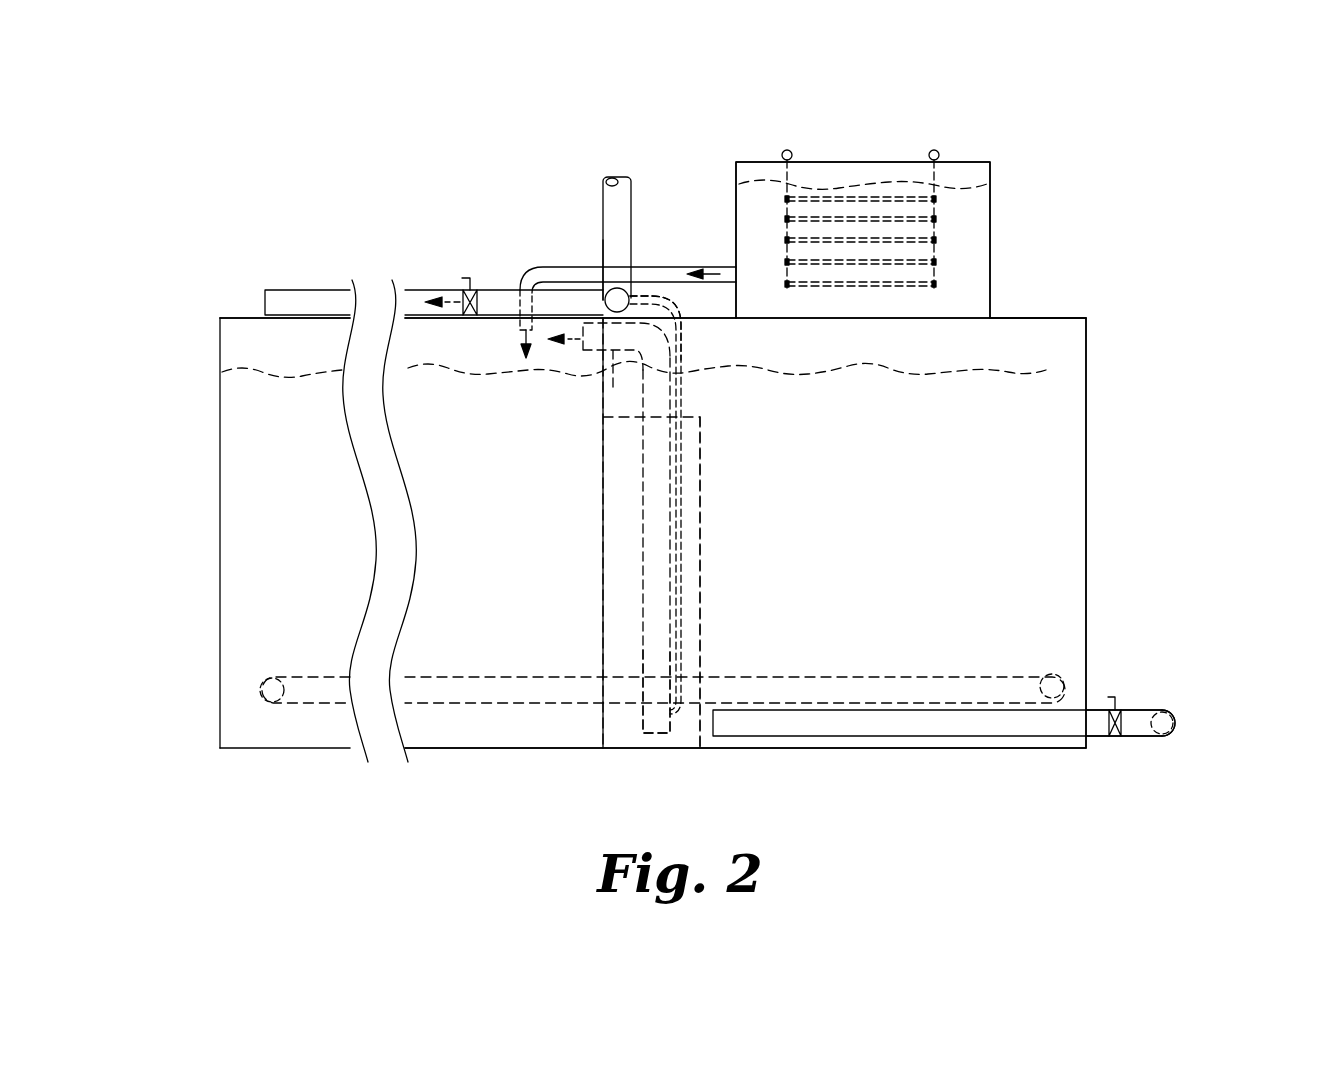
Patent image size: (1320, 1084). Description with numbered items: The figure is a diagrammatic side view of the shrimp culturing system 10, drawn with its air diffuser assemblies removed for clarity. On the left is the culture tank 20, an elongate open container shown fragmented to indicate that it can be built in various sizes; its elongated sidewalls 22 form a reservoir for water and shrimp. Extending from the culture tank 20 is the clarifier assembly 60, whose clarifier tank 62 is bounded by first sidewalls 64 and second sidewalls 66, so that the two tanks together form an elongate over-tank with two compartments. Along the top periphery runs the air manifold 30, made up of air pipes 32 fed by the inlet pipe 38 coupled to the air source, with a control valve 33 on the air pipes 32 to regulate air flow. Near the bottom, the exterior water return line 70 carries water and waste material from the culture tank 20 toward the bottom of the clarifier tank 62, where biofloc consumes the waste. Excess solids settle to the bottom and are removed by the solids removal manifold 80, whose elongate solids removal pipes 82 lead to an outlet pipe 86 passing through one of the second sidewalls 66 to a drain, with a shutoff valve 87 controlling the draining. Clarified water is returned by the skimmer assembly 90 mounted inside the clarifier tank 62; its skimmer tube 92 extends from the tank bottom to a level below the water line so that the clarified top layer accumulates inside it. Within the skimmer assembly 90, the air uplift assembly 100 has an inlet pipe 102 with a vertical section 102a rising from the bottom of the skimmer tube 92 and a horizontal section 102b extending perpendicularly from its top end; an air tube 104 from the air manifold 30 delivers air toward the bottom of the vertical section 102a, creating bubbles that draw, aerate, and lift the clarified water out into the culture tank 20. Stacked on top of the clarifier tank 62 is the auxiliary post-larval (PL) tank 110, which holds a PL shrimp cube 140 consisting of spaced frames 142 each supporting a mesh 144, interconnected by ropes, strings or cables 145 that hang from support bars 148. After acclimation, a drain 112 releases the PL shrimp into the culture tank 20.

The shrimp culturing system 10 is at (1148, 180).
The culture tank 20 is at (200, 500).
The elongated sidewalls 22 is at (301, 566).
The air manifold 30 is at (578, 172).
The air pipes 32 is at (300, 288).
The control valve 33 is at (467, 282).
The inlet pipe 38 is at (612, 229).
The clarifier assembly 60 is at (1132, 408).
The clarifier tank 62 is at (1132, 335).
The first sidewalls 64 is at (815, 645).
The second sidewalls 66 is at (1090, 522).
The exterior water return line 70 is at (505, 668).
The solids removal manifold 80 is at (1212, 725).
The solids removal pipes 82 is at (908, 724).
The outlet pipe 86 is at (1140, 738).
The shutoff valve 87 is at (1117, 697).
The skimmer assembly 90 is at (740, 510).
The skimmer tube 92 is at (700, 568).
The air uplift assembly 100 is at (720, 345).
The inlet pipe 102 is at (612, 497).
The vertical section 102a is at (655, 548).
The horizontal section 102b is at (612, 365).
The air tube 104 is at (678, 310).
The auxiliary post-larval (PL) tank 110 is at (1055, 218).
The drain 112 is at (525, 268).
The PL shrimp cube 140 is at (752, 212).
The frames 142 is at (936, 206).
The mesh 144 is at (850, 195).
The ropes, strings or cables 145 is at (795, 175).
The support bars 148 is at (783, 150).